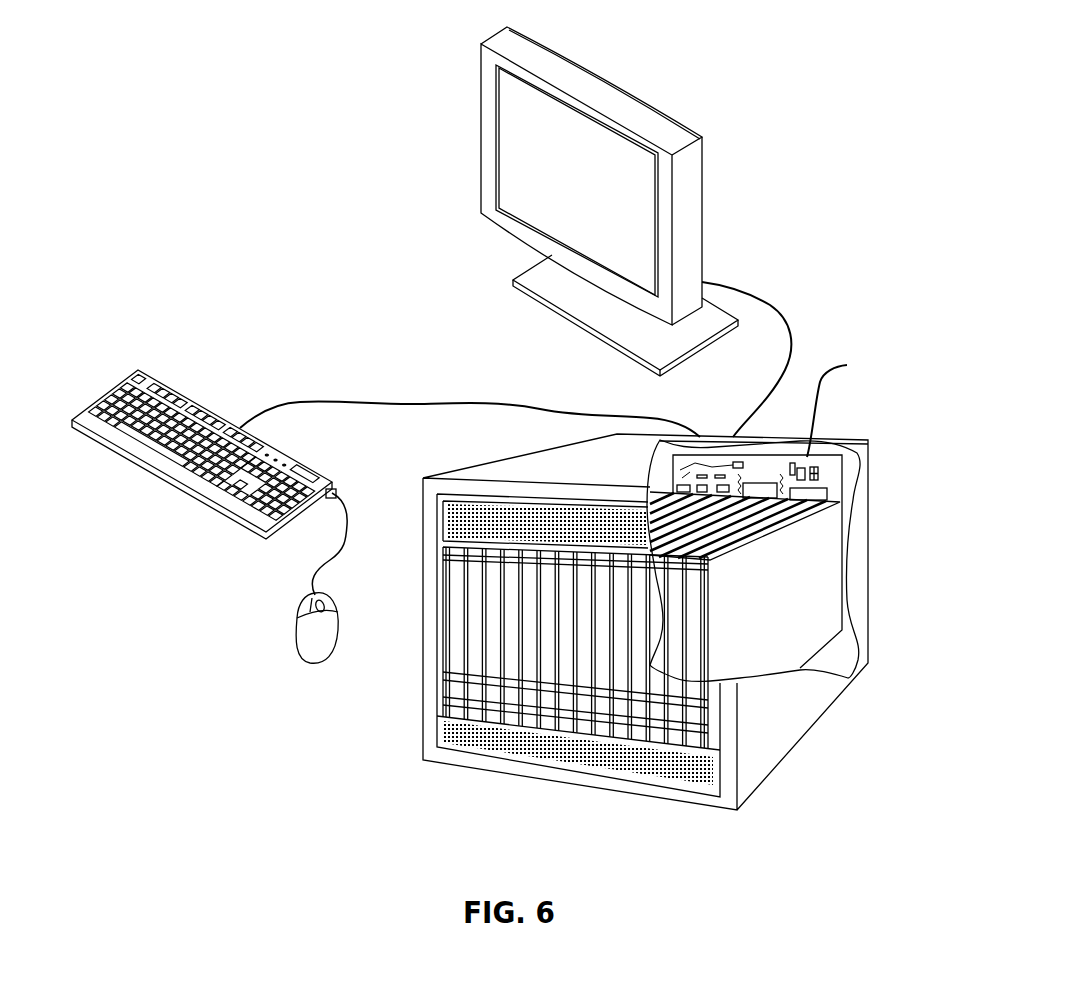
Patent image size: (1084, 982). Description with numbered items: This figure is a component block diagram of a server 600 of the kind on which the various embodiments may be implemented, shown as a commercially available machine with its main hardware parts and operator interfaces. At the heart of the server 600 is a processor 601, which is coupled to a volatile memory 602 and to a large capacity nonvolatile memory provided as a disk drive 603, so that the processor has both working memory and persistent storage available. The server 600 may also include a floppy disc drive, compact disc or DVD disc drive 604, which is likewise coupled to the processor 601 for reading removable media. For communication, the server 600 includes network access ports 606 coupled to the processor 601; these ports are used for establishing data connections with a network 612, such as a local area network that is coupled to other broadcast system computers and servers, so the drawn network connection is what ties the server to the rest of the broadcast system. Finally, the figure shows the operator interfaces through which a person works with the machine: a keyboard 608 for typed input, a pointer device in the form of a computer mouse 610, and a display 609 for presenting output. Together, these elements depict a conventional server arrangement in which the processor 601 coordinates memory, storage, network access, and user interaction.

The server 600 is at (766, 115).
The processor 601 is at (658, 486).
The volatile memory 602 is at (827, 492).
The disk drive 603 is at (487, 595).
The disc drive 604 is at (450, 648).
The network access ports 606 is at (765, 490).
The keyboard 608 is at (198, 405).
The display 609 is at (705, 233).
The computer mouse 610 is at (305, 657).
The network 612 is at (833, 400).